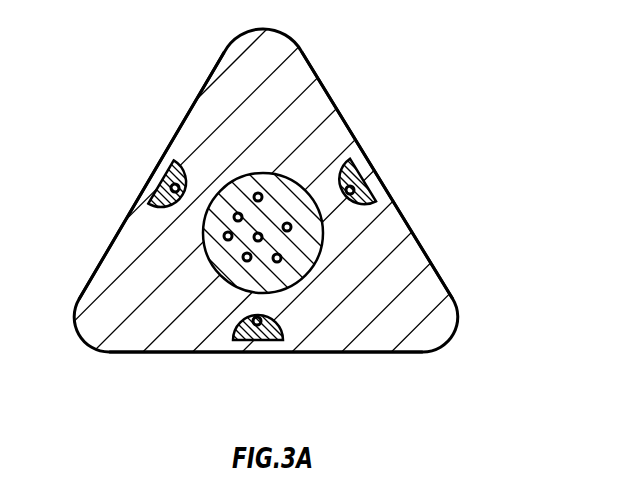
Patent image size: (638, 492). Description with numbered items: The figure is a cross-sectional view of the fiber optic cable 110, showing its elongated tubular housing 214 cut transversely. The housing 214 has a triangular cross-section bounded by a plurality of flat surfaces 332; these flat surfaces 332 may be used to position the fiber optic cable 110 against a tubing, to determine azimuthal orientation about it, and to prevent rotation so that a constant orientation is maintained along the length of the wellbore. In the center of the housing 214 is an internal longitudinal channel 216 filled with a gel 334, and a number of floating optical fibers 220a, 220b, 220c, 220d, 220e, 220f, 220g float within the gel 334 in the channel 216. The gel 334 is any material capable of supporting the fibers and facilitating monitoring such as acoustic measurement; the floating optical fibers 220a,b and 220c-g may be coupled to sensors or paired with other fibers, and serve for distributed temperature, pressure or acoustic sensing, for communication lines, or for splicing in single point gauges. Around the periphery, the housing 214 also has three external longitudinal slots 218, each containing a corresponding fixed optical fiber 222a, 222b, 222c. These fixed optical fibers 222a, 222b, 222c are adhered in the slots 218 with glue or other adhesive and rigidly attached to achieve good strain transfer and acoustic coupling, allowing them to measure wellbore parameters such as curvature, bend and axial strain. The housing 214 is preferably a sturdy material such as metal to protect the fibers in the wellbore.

The fiber optic cable 110 is at (319, 211).
The housing 214 is at (319, 200).
The internal longitudinal channel 216 is at (318, 258).
The external longitudinal slots 218 is at (170, 189).
The floating optical fiber 220a is at (256, 193).
The floating optical fiber 220b is at (238, 212).
The floating optical fiber 220c is at (233, 238).
The floating optical fiber 220d is at (263, 239).
The floating optical fiber 220e is at (290, 231).
The floating optical fiber 220f is at (252, 259).
The floating optical fiber 220g is at (281, 260).
The floating optical fibers 220a,b is at (161, 153).
The floating optical fibers 220c-g is at (323, 321).
The fixed optical fiber 222a is at (152, 168).
The fixed optical fiber 222b is at (258, 343).
The fixed optical fiber 222c is at (371, 168).
The flat surfaces 332 is at (210, 73).
The gel 334 is at (288, 166).